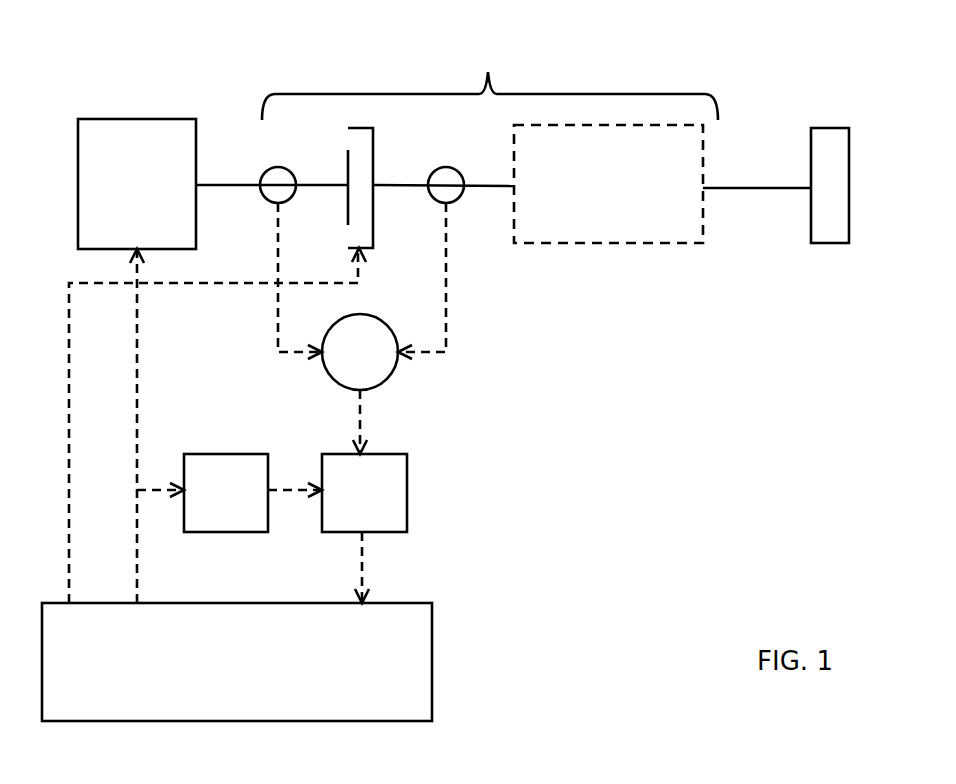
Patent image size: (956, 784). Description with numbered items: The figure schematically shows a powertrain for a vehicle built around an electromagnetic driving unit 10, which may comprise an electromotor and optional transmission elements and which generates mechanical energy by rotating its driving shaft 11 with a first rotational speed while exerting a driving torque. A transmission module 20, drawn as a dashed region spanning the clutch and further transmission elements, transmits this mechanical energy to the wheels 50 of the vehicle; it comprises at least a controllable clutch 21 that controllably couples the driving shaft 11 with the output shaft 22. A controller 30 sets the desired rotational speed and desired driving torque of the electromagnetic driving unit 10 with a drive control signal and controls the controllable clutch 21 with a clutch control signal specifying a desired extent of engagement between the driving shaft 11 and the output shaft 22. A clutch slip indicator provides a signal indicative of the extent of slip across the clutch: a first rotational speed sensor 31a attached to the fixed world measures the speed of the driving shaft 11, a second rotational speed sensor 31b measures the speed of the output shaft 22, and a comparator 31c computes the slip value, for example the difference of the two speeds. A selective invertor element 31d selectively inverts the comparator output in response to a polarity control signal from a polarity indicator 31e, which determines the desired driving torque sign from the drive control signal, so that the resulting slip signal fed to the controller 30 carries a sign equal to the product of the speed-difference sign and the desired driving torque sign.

The electromagnetic driving unit 10 is at (147, 196).
The driving shaft 11 is at (227, 182).
The transmission module 20 is at (490, 151).
The controllable clutch 21 is at (377, 167).
The output shaft 22 is at (482, 190).
The controller 30 is at (255, 677).
The first rotational speed sensor 31a is at (265, 172).
The second rotational speed sensor 31b is at (455, 202).
The comparator 31c is at (390, 378).
The selective invertor element 31d is at (343, 521).
The polarity indicator 31e is at (202, 493).
The wheels 50 is at (830, 127).